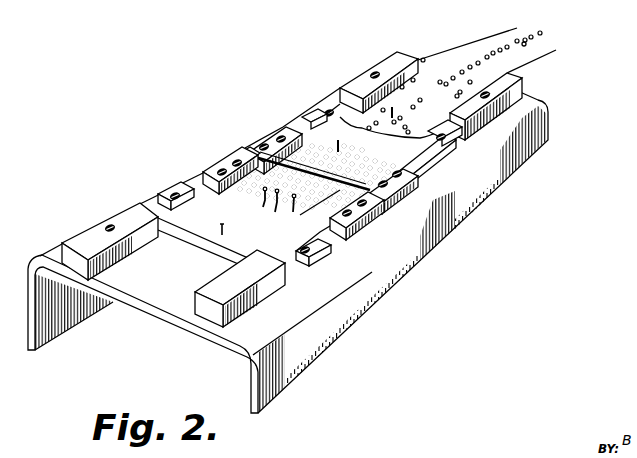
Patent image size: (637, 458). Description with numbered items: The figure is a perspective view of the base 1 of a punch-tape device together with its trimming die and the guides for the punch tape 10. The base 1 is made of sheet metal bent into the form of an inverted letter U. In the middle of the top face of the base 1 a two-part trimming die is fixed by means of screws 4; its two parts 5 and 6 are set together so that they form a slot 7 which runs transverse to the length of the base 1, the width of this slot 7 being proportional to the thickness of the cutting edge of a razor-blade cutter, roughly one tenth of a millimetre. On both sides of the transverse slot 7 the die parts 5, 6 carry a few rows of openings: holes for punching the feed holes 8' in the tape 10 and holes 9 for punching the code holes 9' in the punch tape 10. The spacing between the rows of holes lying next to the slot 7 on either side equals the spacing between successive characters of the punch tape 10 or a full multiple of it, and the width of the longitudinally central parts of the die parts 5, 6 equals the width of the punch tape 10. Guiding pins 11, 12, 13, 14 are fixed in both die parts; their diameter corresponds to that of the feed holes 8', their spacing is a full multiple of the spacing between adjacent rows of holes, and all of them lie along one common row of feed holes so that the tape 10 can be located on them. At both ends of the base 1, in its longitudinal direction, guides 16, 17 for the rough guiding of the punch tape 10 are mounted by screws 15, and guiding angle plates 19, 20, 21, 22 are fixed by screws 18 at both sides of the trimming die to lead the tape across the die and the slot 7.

The base 1 is at (251, 381).
The screws 4 is at (164, 194).
The trimming die part 5 is at (326, 243).
The trimming die part 6 is at (420, 165).
The slot 7 is at (258, 134).
The feed holes 8' is at (527, 28).
The holes 9 is at (319, 184).
The code holes 9' is at (454, 82).
The punch tape 10 is at (543, 49).
The guiding pin 11 is at (225, 232).
The guiding pin 12 is at (264, 202).
The guiding pin 13 is at (340, 147).
The guiding pin 14 is at (395, 113).
The screws 15 is at (110, 226).
The guide 16 is at (200, 323).
The guide 17 is at (389, 66).
The screws 18 is at (210, 168).
The guiding angle plate 19 is at (341, 230).
The guiding angle plate 20 is at (378, 205).
The guiding angle plate 21 is at (229, 160).
The guiding angle plate 22 is at (260, 134).